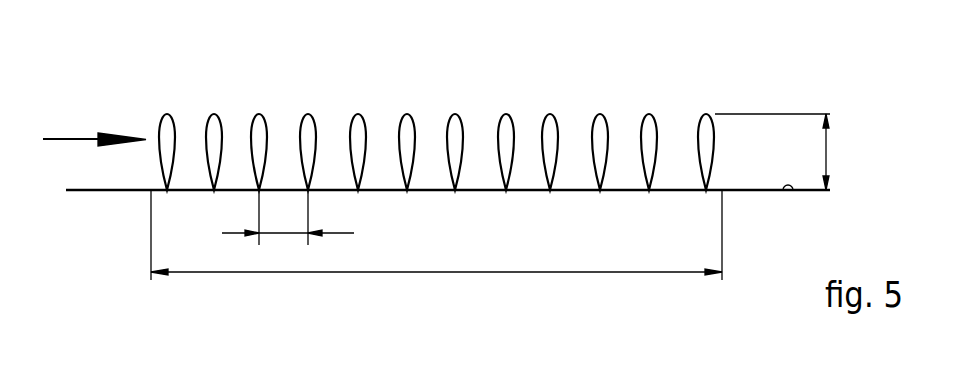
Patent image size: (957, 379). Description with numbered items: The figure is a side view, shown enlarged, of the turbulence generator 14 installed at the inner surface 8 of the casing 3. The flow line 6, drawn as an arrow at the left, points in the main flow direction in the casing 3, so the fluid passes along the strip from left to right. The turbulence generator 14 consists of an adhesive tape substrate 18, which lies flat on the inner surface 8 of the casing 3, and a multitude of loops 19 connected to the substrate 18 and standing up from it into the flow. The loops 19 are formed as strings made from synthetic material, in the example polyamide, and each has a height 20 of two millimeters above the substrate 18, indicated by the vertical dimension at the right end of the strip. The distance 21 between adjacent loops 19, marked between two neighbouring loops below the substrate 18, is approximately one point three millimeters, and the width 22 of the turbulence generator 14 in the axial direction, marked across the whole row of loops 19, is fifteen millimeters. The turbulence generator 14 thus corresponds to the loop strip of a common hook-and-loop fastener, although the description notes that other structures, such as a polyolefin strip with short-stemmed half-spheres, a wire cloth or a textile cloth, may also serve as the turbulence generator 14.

The casing 3 is at (756, 190).
The flow line 6 is at (94, 225).
The inner surface 8 is at (793, 190).
The turbulence generator 14 is at (432, 142).
The adhesive tape substrate 18 is at (523, 190).
The loops 19 is at (357, 115).
The height 20 is at (826, 145).
The distance 21 is at (290, 233).
The width 22 is at (492, 272).